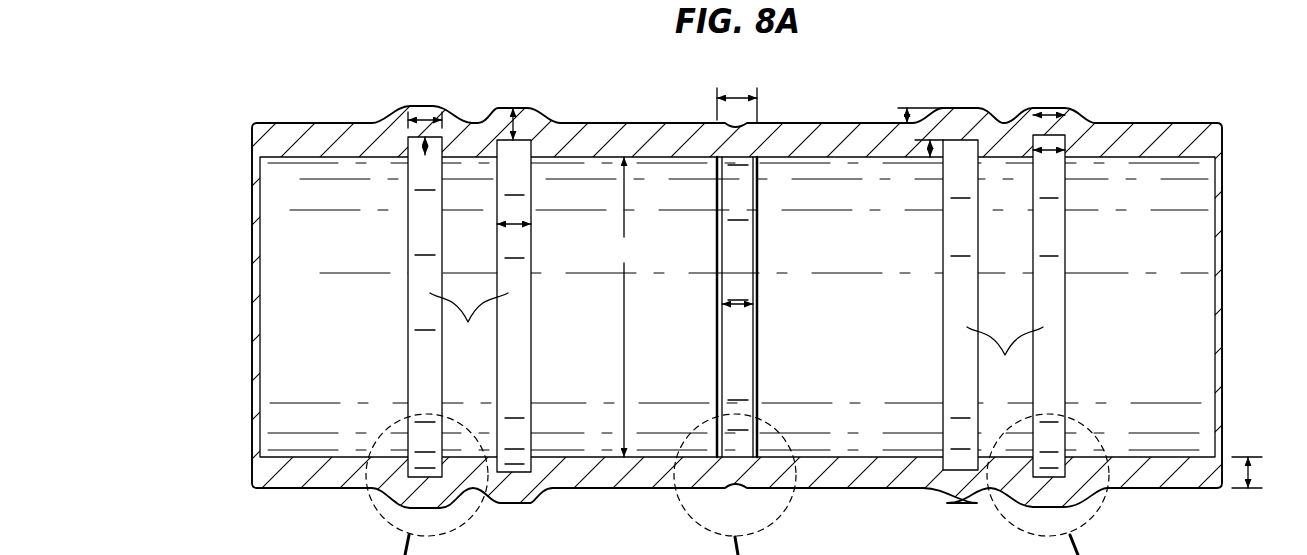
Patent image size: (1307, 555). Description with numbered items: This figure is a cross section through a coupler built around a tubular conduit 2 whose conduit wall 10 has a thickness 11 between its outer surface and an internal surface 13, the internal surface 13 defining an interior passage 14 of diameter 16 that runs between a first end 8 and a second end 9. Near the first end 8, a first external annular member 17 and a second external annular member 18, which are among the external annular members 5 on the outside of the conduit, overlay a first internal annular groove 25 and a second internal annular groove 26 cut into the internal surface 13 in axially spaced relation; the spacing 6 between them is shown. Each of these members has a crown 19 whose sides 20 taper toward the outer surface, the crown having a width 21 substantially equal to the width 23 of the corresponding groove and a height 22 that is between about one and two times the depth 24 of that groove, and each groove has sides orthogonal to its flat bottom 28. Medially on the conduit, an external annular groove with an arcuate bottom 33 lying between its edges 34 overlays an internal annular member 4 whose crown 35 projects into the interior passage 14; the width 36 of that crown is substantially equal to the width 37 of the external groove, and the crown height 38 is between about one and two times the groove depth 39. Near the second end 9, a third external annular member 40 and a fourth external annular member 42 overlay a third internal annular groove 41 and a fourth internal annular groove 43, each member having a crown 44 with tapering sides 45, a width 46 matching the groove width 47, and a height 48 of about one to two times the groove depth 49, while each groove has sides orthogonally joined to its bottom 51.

The tubular conduit 2 is at (291, 115).
The internal annular member 4 is at (740, 362).
The external annular members 5 is at (487, 120).
The spacing between bands 6 is at (736, 339).
The first end 8 is at (252, 205).
The second end 9 is at (1222, 203).
The conduit wall 10 is at (1158, 490).
The thickness 11 is at (1259, 472).
The internal surface 13 is at (852, 352).
The interior passage 14 is at (291, 327).
The diameter 16 is at (624, 307).
The first external annular member 17 is at (392, 118).
The second external annular member 18 is at (527, 107).
The crown 19 is at (506, 106).
The side 20 is at (375, 122).
The width 21 is at (422, 116).
The height 22 is at (530, 112).
The width 23 is at (512, 226).
The depth 24 is at (407, 147).
The first internal annular groove 25 is at (410, 372).
The second internal annular groove 26 is at (518, 365).
The bottom 28 is at (952, 492).
The arcuate bottom 33 is at (737, 126).
The edges 34 is at (740, 126).
The crown 35 is at (740, 163).
The width 36 is at (737, 306).
The width 37 is at (737, 90).
The height 38 is at (716, 158).
The depth 39 is at (720, 125).
The third external annular member 40 is at (952, 107).
The third internal annular groove 41 is at (947, 228).
The fourth external annular member 42 is at (1040, 107).
The fourth internal annular groove 43 is at (1060, 230).
The crown 44 is at (1058, 110).
The side 45 is at (1068, 118).
The width 46 is at (1075, 116).
The width 47 is at (1050, 152).
The height 48 is at (903, 117).
The depth 49 is at (925, 150).
The bottom 51 is at (960, 468).